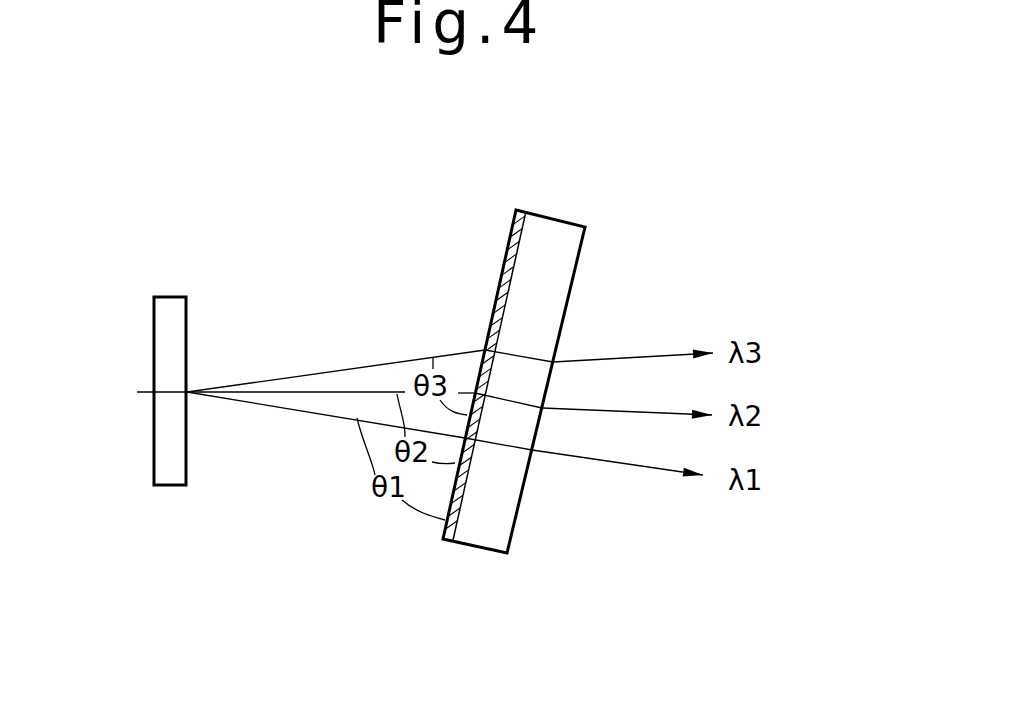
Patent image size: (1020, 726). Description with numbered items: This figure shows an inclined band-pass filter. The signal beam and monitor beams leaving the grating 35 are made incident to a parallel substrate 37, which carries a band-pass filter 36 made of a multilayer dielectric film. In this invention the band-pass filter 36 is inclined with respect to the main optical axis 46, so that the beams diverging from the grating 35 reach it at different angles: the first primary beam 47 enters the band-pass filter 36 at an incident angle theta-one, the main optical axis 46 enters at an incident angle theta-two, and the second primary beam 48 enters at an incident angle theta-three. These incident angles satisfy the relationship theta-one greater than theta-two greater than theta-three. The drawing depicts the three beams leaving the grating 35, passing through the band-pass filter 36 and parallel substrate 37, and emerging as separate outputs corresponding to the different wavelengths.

The grating 35 is at (172, 296).
The band-pass filter 36 is at (513, 210).
The parallel substrate 37 is at (563, 219).
The main optical axis 46 is at (312, 394).
The first primary beam 47 is at (327, 417).
The second primary beam 48 is at (330, 369).